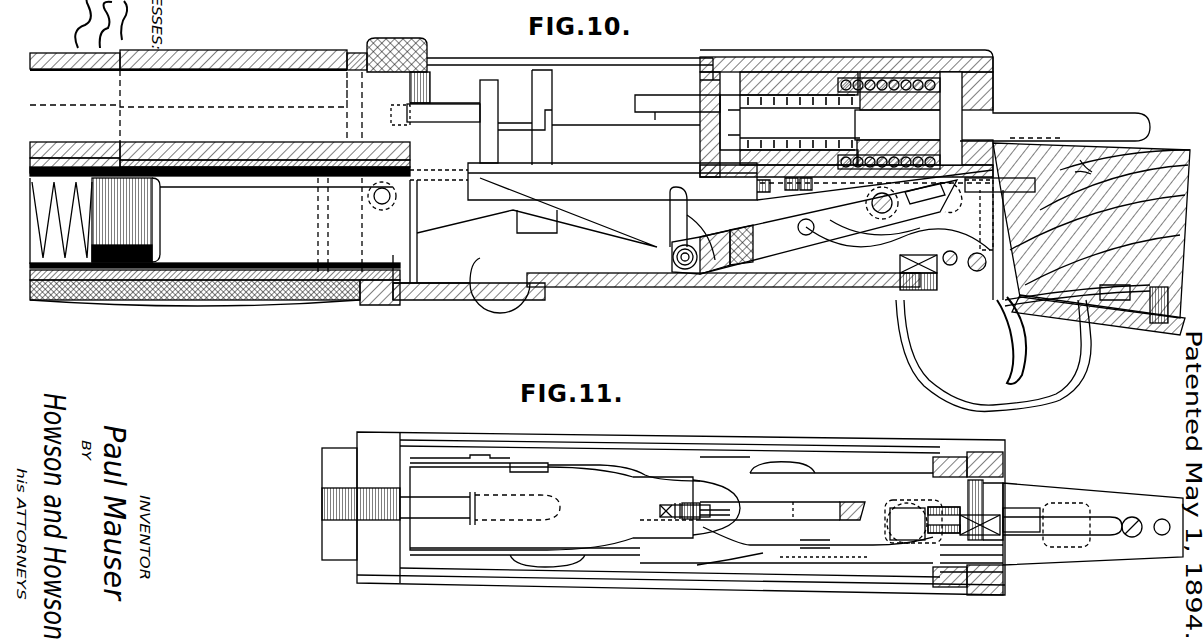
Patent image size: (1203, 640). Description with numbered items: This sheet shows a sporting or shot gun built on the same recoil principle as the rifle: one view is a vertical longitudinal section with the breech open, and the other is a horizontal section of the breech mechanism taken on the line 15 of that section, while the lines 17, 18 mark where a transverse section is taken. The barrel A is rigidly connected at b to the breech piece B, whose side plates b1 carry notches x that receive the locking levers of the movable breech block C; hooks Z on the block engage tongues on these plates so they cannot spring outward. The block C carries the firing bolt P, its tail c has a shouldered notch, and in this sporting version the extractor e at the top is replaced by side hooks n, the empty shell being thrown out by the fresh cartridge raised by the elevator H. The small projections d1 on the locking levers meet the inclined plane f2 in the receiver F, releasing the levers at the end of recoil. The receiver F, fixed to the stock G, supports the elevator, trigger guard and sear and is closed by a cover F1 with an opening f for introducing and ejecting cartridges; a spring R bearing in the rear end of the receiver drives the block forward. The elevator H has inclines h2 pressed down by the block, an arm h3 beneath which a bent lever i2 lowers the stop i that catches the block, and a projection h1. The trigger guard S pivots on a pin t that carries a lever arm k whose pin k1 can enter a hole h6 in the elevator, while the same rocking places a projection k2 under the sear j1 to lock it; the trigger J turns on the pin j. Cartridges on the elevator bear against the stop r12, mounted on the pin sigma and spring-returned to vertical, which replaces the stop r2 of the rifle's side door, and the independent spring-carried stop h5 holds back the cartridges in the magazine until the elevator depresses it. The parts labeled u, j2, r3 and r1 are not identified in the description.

In FIG. 10, the section line 17 is at (648, 60).
In FIG. 10, the section line 18 is at (645, 285).
In FIG. 10, the section line 15 is at (468, 170).
In FIG. 10, the barrel A is at (228, 107).
In FIG. 10, the projections or hooks Z is at (61, 221).
In FIG. 10, the stock G is at (215, 301).
In FIG. 10, the opening in cover f is at (500, 58).
In FIG. 11, the opening in cover f is at (730, 561).
In FIG. 10, the barrel connection b is at (378, 162).
In FIG. 10, the breech piece B is at (443, 180).
In FIG. 10, the side plate or cheek b1 is at (506, 121).
In FIG. 10, the notches x is at (609, 117).
In FIG. 10, the movable breech block C is at (843, 186).
In FIG. 10, the hooks n is at (740, 181).
In FIG. 10, the cover F1 is at (745, 58).
In FIG. 11, the cover F1 is at (821, 523).
In FIG. 10, the mainspring u is at (800, 122).
In FIG. 10, the firing bolt P is at (907, 125).
In FIG. 10, the stop r2 is at (915, 120).
In FIG. 10, the spring R is at (860, 57).
In FIG. 10, the extractor e is at (1083, 169).
In FIG. 10, the inclines h2 is at (520, 205).
In FIG. 11, the inclines h2 is at (555, 511).
In FIG. 10, the bent lever i2 is at (612, 212).
In FIG. 10, the stop h5 is at (692, 223).
In FIG. 11, the stop h5 is at (480, 508).
In FIG. 10, the cartridge elevator H is at (760, 227).
In FIG. 11, the cartridge elevator H is at (575, 508).
In FIG. 10, the pin or bolt k1 is at (798, 227).
In FIG. 11, the pin or bolt k1 is at (805, 546).
In FIG. 10, the lever arm k is at (898, 242).
In FIG. 11, the lever arm k is at (818, 554).
In FIG. 10, the stop i is at (881, 203).
In FIG. 10, the arm of elevator h3 is at (925, 193).
In FIG. 10, the projection on elevator h1 is at (951, 198).
In FIG. 11, the projection on elevator h1 is at (976, 558).
In FIG. 10, the cylindrical projection d1 is at (875, 192).
In FIG. 10, the inclined plane f2 is at (763, 193).
In FIG. 11, the inclined plane f2 is at (782, 473).
In FIG. 10, the receiver F is at (656, 284).
In FIG. 11, the receiver F is at (663, 513).
In FIG. 10, the pin t is at (905, 290).
In FIG. 10, the projection k2 is at (945, 290).
In FIG. 10, the sear j1 is at (948, 251).
In FIG. 10, the pin j is at (977, 271).
In FIG. 11, the pin j is at (938, 514).
In FIG. 10, the trigger lever j2 is at (979, 215).
In FIG. 11, the trigger lever j2 is at (965, 510).
In FIG. 10, the tail of breech block c is at (1000, 185).
In FIG. 10, the trigger guard spring r3 is at (1077, 291).
In FIG. 10, the trigger J is at (1010, 340).
In FIG. 10, the trigger guard S is at (993, 355).
In FIG. 11, the stop r12 is at (673, 507).
In FIG. 11, the pin or axis sigma is at (715, 505).
In FIG. 11, the hole in elevator h6 is at (802, 508).
In FIG. 11, the tang r1 is at (1093, 524).